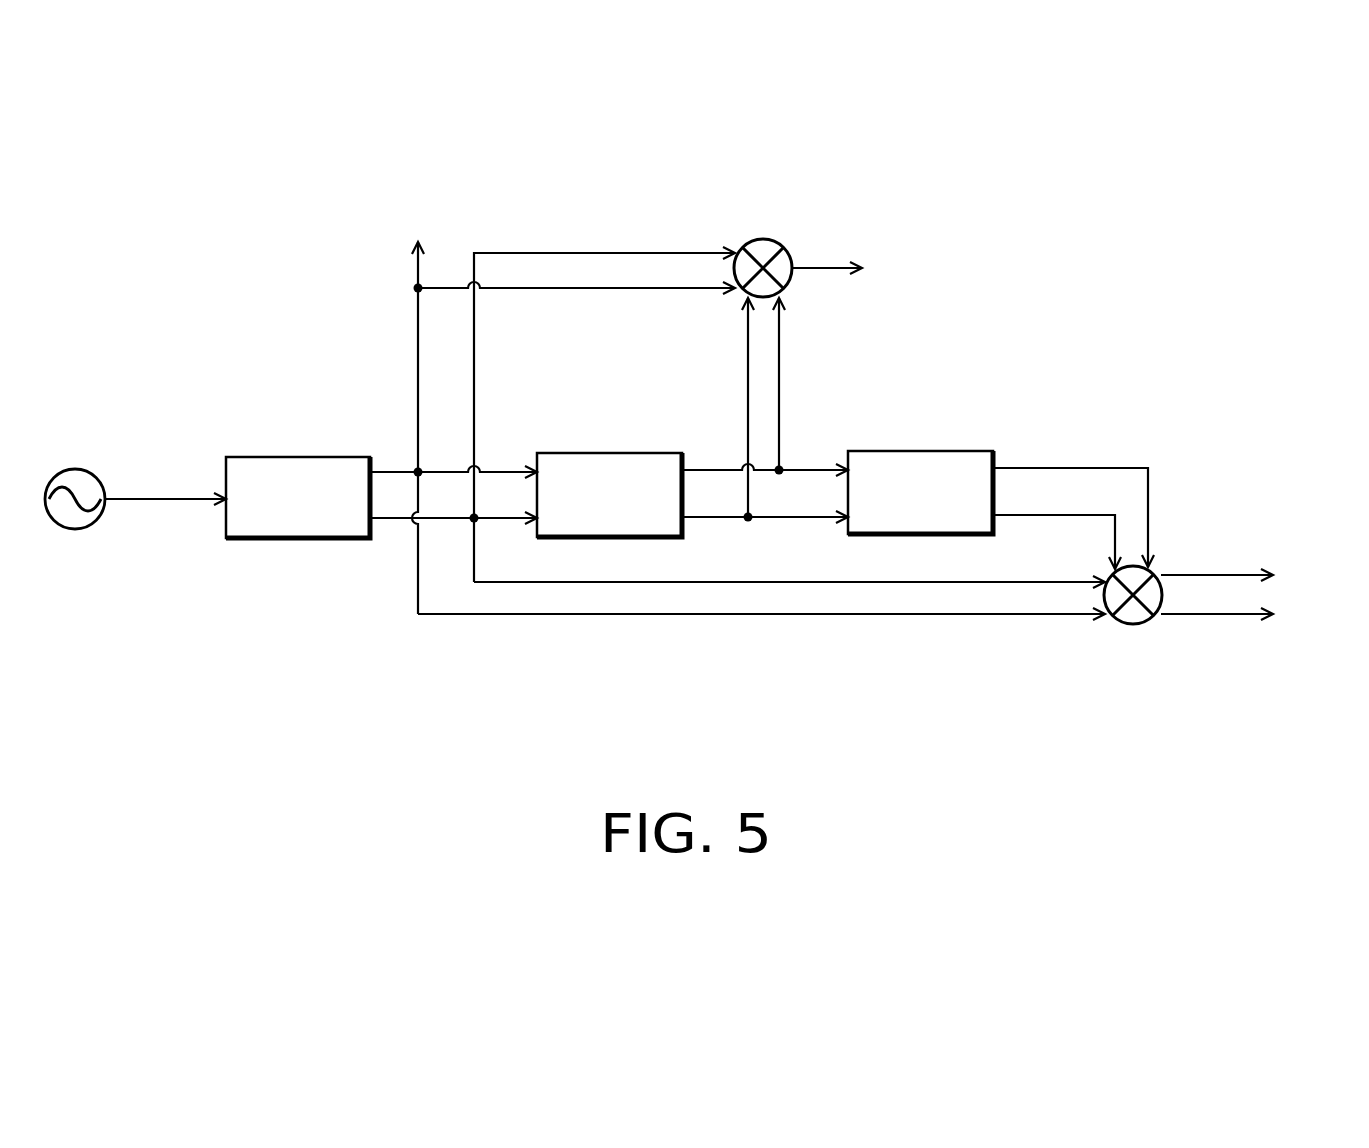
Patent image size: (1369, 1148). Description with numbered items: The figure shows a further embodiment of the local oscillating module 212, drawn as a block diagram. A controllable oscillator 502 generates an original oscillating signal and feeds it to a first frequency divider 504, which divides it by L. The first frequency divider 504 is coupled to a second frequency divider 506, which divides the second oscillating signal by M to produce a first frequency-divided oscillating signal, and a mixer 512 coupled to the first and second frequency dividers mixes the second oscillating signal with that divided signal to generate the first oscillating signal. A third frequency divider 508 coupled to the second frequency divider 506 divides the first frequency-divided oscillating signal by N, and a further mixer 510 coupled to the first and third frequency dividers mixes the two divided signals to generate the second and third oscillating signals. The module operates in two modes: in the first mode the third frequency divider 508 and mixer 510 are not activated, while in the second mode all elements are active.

The local oscillating module 212 is at (1280, 185).
The controllable oscillator 502 is at (70, 470).
The first frequency divider 504 is at (300, 457).
The second frequency divider 506 is at (648, 453).
The third frequency divider 508 is at (918, 451).
The mixer 510 is at (1140, 623).
The mixer 512 is at (762, 240).